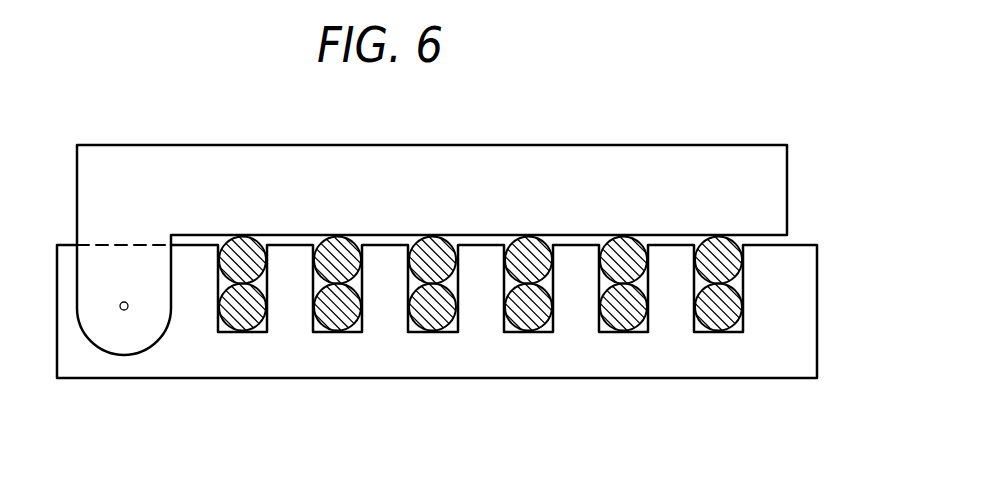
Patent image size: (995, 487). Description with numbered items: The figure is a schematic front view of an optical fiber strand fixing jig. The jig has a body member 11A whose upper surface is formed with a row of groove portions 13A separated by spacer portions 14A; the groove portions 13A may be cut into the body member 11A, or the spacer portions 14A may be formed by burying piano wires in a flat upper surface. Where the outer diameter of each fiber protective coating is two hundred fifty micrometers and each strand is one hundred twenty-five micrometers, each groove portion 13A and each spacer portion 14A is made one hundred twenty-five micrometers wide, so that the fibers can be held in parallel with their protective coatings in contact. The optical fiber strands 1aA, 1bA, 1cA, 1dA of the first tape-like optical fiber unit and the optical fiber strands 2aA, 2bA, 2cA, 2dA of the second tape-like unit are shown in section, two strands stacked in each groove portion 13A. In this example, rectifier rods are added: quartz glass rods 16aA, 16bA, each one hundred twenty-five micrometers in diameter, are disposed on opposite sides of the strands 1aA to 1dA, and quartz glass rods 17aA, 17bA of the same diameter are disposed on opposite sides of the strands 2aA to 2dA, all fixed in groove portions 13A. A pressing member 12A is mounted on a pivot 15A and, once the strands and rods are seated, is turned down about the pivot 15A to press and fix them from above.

The pressing member 12A is at (150, 158).
The body member 11A is at (207, 367).
The groove portions 13A is at (753, 287).
The spacer portions 14A is at (666, 282).
The pivot 15A is at (124, 310).
The rectifier rod 16aA is at (258, 237).
The rectifier rod 16bA is at (253, 322).
The optical fiber strand 1aA is at (340, 238).
The optical fiber strand 1bA is at (437, 238).
The optical fiber strand 1cA is at (533, 238).
The optical fiber strand 1dA is at (630, 237).
The optical fiber strand 2aA is at (343, 320).
The optical fiber strand 2bA is at (447, 320).
The optical fiber strand 2cA is at (540, 316).
The optical fiber strand 2dA is at (633, 325).
The rectifier rod 17aA is at (723, 237).
The rectifier rod 17bA is at (743, 313).